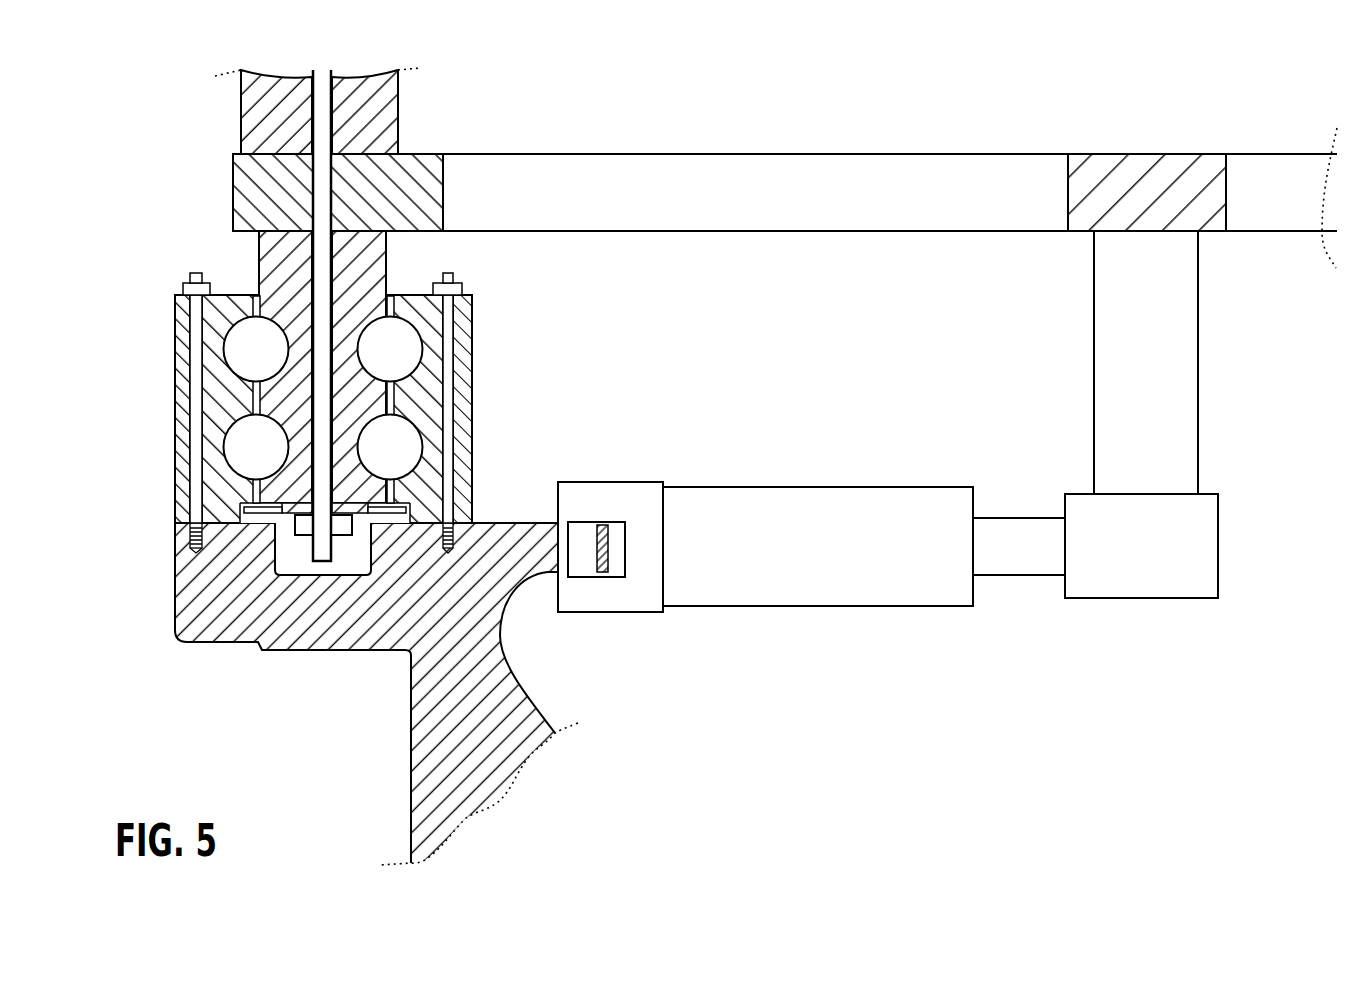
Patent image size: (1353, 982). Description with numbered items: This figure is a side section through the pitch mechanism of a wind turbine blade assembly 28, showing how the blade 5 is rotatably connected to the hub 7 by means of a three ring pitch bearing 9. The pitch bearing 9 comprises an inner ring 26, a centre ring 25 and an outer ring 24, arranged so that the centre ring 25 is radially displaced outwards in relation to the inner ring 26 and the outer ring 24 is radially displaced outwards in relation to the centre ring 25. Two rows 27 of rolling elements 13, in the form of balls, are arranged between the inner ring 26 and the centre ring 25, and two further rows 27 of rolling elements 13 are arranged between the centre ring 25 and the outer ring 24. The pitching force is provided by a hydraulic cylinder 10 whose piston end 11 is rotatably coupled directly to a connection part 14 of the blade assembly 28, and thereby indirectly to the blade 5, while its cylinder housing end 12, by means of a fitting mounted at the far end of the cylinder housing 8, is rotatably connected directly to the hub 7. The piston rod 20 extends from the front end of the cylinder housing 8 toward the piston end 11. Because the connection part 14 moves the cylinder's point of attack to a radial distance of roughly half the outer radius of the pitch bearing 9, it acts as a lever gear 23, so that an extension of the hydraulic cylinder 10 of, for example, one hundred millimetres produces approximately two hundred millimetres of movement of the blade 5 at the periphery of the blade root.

The blade 5 is at (370, 122).
The blade assembly 28 is at (318, 111).
The outer ring 24 is at (217, 387).
The centre ring 25 is at (387, 260).
The rolling elements 13 is at (423, 399).
The rows 27 is at (390, 349).
The inner ring 26 is at (423, 393).
The pitch bearing 9 is at (381, 383).
The connection part 14 is at (785, 311).
The lever gear 23 is at (800, 190).
The hub 7 is at (418, 600).
The cylinder housing end 12 is at (577, 558).
The cylinder housing 8 is at (785, 563).
The hydraulic cylinder 10 is at (897, 640).
The piston rod 20 is at (1010, 550).
The piston end 11 is at (1143, 552).